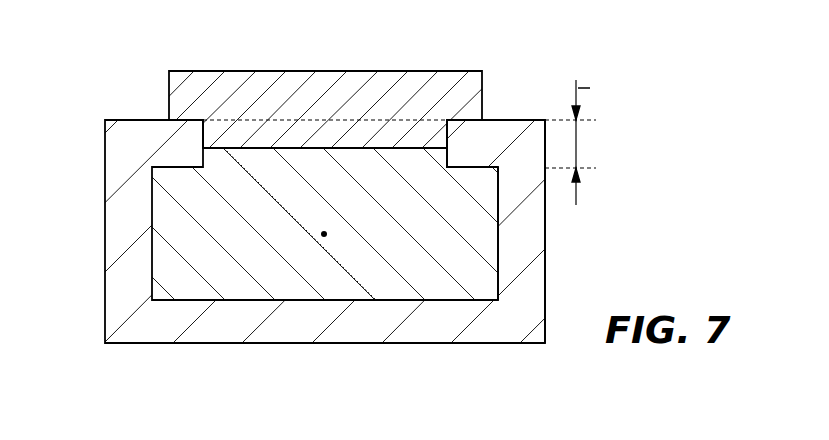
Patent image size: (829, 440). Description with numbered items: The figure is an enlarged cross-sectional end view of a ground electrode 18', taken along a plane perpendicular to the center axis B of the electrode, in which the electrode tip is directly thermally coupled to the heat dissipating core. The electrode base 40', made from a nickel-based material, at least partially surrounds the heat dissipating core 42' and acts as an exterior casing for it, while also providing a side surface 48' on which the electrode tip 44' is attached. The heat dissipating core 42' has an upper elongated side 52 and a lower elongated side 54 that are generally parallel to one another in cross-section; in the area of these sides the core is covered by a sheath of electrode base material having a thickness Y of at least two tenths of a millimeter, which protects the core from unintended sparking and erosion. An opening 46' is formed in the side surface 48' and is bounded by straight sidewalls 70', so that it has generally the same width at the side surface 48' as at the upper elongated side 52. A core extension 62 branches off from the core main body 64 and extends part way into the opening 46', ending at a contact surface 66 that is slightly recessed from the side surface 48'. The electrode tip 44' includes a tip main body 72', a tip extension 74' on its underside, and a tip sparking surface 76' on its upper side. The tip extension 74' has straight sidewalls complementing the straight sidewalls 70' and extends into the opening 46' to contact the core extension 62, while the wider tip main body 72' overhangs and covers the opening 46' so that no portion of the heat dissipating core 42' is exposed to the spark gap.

The ground electrode 18' is at (637, 93).
The electrode base 40' is at (372, 231).
The heat dissipating core 42' is at (538, 231).
The electrode tip 44' is at (323, 79).
The opening 46' is at (168, 104).
The side surface 48' is at (120, 123).
The upper elongated side 52 is at (480, 166).
The lower elongated side 54 is at (427, 300).
The core extension 62 is at (333, 147).
The core main body 64 is at (243, 227).
The contact surface 66 is at (280, 147).
The straight sidewalls 70' is at (325, 174).
The tip main body 72' is at (347, 53).
The tip extension 74' is at (442, 84).
The tip sparking surface 76' is at (325, 36).
The center axis B is at (324, 234).
The thickness Y is at (579, 140).